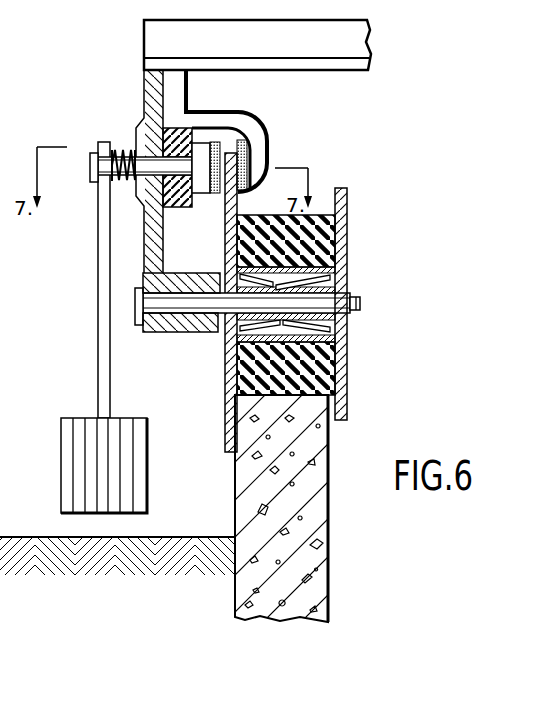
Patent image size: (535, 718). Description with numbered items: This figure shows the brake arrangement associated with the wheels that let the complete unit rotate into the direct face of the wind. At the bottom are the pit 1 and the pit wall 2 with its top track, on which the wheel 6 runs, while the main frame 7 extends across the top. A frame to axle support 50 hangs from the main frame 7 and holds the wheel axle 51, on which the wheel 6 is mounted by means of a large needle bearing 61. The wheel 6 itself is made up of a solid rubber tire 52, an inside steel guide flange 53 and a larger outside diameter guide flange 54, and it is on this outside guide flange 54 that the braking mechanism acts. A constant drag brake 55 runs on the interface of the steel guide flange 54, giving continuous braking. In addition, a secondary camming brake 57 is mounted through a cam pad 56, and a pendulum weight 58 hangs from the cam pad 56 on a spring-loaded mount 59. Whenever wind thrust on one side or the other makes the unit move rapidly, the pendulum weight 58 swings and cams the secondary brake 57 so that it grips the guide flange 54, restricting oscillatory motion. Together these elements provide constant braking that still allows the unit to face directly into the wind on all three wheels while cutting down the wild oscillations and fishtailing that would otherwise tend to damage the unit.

The pit 1 is at (383, 569).
The pit wall 2 is at (328, 495).
The wheel 6 is at (374, 288).
The main frame 7 is at (144, 32).
The frame to axle support 50 is at (144, 80).
The wheel axle 51 is at (172, 301).
The solid rubber tire 52 is at (337, 243).
The inside steel guide flange 53 is at (344, 382).
The outside guide flange 54 is at (225, 367).
The constant drag brake 55 is at (255, 131).
The cam pad 56 is at (210, 127).
The secondary camming brake 57 is at (214, 199).
The pendulum weight 58 is at (69, 418).
The spring 59 is at (122, 148).
The needle bearing 61 is at (345, 328).